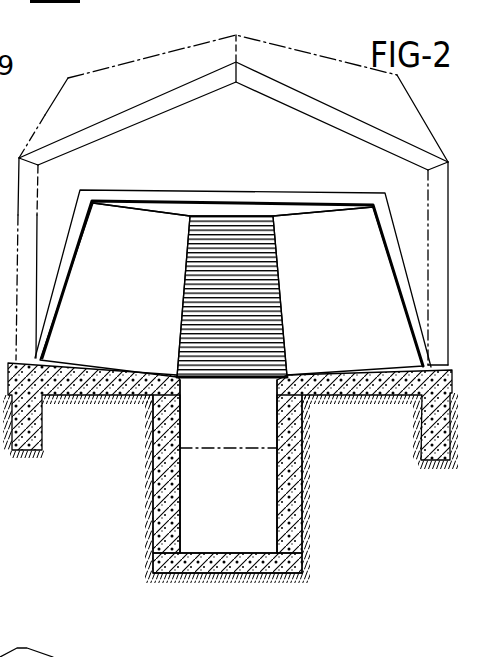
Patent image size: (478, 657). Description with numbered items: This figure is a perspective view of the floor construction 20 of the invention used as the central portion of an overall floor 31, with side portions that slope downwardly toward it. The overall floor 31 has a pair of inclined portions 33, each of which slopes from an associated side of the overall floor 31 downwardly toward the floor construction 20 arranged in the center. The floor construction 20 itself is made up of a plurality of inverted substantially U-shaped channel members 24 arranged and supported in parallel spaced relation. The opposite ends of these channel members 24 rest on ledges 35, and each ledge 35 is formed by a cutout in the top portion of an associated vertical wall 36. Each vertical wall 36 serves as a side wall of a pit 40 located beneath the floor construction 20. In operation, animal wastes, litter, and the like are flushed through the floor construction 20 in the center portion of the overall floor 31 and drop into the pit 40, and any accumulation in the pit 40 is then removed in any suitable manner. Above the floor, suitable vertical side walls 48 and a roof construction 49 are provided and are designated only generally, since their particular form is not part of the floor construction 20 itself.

The floor construction 20 is at (213, 185).
The channel members 24 is at (188, 333).
The overall floor 31 is at (272, 174).
The inclined portions 33 is at (132, 225).
The ledges 35 is at (277, 383).
The vertical wall 36 is at (167, 486).
The pit 40 is at (246, 540).
The vertical side walls 48 is at (40, 192).
The roof construction 49 is at (124, 62).